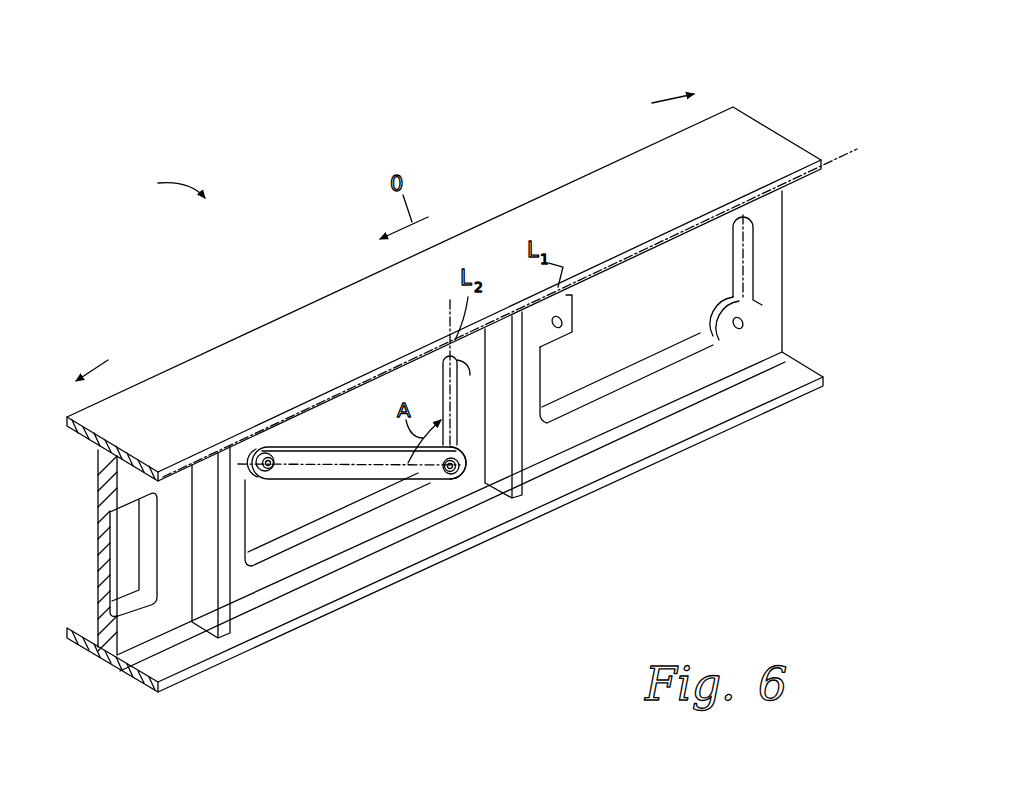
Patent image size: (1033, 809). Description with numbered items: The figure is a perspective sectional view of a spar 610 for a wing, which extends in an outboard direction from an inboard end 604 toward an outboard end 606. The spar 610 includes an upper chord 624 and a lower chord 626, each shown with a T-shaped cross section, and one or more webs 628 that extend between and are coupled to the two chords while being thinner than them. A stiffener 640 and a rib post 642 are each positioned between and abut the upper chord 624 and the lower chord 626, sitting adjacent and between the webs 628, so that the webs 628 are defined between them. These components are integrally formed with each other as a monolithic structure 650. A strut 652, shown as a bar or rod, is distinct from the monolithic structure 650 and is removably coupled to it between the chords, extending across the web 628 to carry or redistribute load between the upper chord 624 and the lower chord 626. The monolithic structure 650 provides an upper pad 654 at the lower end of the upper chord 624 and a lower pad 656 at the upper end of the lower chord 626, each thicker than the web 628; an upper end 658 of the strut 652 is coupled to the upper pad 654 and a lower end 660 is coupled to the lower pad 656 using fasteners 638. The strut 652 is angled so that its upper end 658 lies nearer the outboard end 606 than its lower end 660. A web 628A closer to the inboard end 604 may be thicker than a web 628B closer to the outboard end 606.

The inboard end 604 is at (672, 96).
The outboard end 606 is at (98, 360).
The spar 610 is at (161, 189).
The upper chord 624 is at (100, 479).
The lower chord 626 is at (87, 628).
The webs 628 is at (108, 563).
The web 628A is at (711, 253).
The web 628B is at (387, 390).
The fasteners 638 is at (267, 455).
The stiffener 640 is at (232, 621).
The rib post 642 is at (527, 483).
The monolithic structure 650 is at (560, 197).
The strut 652 is at (343, 462).
The upper pad 654 is at (565, 330).
The lower pad 656 is at (722, 313).
The upper end 658 is at (255, 461).
The lower end 660 is at (455, 468).